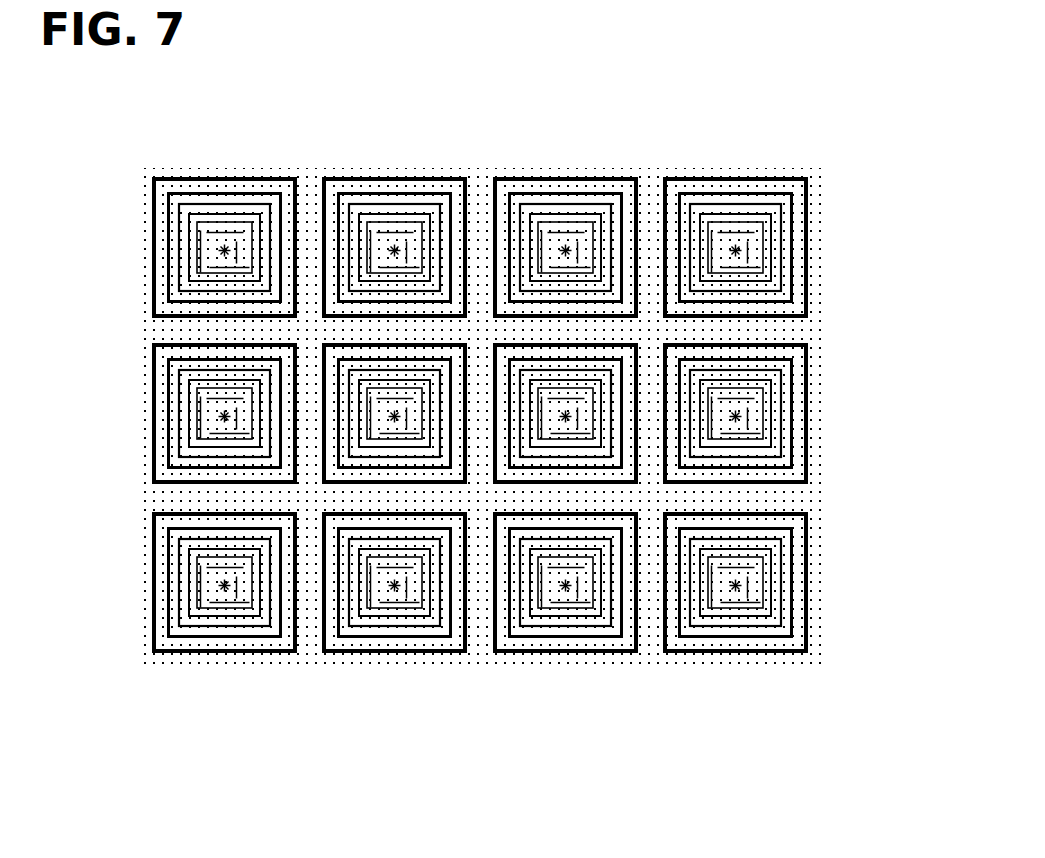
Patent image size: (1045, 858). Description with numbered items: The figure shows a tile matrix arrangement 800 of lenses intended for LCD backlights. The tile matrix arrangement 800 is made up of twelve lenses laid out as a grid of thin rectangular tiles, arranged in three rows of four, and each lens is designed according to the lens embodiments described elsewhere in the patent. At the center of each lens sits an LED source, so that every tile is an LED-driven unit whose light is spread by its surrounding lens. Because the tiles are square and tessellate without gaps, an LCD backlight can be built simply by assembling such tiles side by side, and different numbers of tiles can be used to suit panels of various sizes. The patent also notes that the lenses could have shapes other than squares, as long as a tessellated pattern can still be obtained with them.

The tile matrix arrangement 800 is at (446, 32).